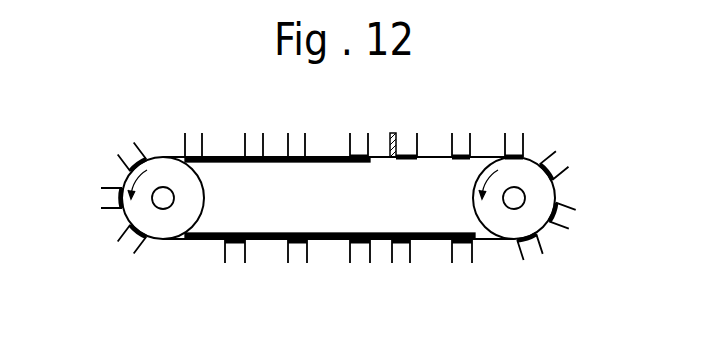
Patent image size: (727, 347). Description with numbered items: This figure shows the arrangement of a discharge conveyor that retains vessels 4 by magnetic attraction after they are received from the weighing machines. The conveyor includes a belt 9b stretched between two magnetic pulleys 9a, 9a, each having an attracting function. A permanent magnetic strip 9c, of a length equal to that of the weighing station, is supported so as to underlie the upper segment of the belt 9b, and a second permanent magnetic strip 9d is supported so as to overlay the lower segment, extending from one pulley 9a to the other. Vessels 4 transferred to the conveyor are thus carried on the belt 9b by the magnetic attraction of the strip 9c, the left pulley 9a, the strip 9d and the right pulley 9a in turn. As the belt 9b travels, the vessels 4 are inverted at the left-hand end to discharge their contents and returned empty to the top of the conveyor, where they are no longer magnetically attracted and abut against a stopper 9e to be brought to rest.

The vessel 4 is at (185, 138).
The magnetic pulley 9a is at (124, 212).
The belt 9b is at (428, 160).
The permanent magnetic strip 9c is at (290, 163).
The permanent magnetic strip 9d is at (325, 233).
The stopper 9e is at (393, 132).